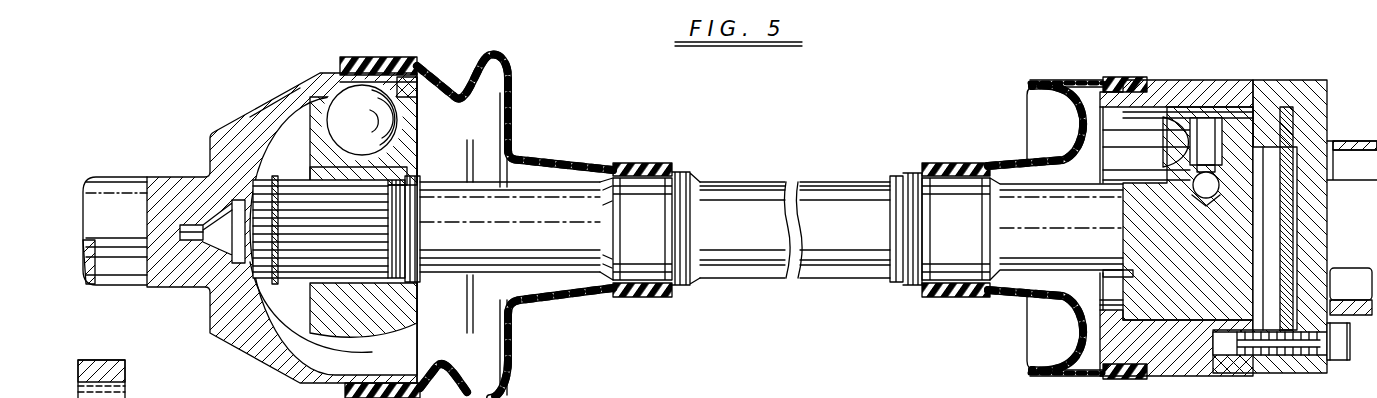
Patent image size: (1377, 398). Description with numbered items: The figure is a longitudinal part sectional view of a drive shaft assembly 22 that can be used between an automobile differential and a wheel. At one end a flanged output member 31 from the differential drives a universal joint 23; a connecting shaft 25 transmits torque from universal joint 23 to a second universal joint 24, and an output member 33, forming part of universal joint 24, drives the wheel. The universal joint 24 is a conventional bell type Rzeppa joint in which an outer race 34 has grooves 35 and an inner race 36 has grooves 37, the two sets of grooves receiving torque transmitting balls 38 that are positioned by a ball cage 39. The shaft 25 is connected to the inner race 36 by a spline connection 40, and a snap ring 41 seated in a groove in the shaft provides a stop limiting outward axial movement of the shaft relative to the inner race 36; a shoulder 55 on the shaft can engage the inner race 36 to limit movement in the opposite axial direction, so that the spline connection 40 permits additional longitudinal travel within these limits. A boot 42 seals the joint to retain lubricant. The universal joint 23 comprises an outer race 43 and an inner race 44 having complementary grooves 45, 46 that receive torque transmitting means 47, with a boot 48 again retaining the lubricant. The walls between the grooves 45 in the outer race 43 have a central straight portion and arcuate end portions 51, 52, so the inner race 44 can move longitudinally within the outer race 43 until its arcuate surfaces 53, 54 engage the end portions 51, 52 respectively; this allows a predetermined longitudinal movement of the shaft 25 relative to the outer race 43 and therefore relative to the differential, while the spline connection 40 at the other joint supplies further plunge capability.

The drive shaft assembly 22 is at (742, 167).
The universal joint 23 is at (1165, 74).
The universal joint 24 is at (290, 72).
The connecting shaft 25 is at (845, 187).
The flanged output member 31 is at (1308, 83).
The output member 33 is at (122, 282).
The outer race 34 is at (253, 115).
The grooves 35 is at (415, 62).
The inner race 36 is at (407, 307).
The grooves 37 is at (407, 160).
The torque transmitting balls 38 is at (397, 110).
The ball cage 39 is at (407, 327).
The spline connection 40 is at (317, 192).
The snap ring 41 is at (275, 288).
The boot 42 is at (562, 163).
The outer race 43 is at (1227, 87).
The inner race 44 is at (1147, 218).
The grooves 45 is at (1270, 123).
The grooves 46 is at (1147, 150).
The torque transmitting means 47 is at (1177, 127).
The boot 48 is at (1000, 163).
The arcuate end portion 51 is at (1103, 307).
The arcuate end portion 52 is at (1255, 298).
The arcuate surface 53 is at (1137, 300).
The arcuate surface 54 is at (1228, 310).
The shoulder 55 is at (412, 215).